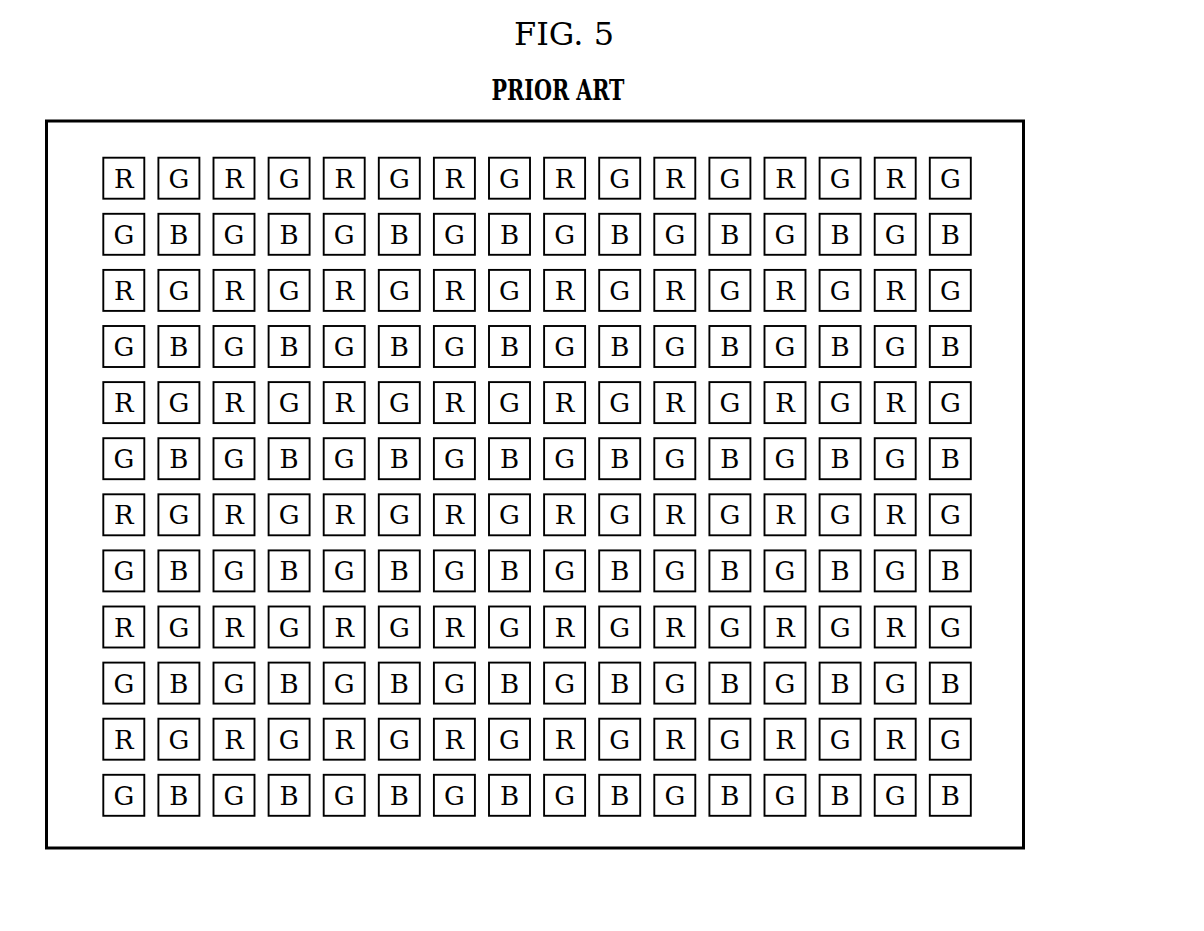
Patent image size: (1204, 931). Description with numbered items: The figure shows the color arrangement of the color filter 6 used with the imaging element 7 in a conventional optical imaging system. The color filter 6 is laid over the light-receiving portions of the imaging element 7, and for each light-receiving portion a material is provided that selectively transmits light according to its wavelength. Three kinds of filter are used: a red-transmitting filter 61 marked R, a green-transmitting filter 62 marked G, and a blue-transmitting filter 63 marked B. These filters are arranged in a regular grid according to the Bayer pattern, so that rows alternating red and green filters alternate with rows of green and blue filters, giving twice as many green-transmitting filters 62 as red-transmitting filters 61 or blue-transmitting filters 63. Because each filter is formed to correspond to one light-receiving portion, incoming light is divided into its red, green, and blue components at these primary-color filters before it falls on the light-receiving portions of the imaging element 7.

The imaging element 7 is at (1018, 424).
The color filter 6 is at (1032, 590).
The red-transmitting filter 61 is at (907, 622).
The green-transmitting filter 62 is at (907, 566).
The blue-transmitting filter 63 is at (966, 573).